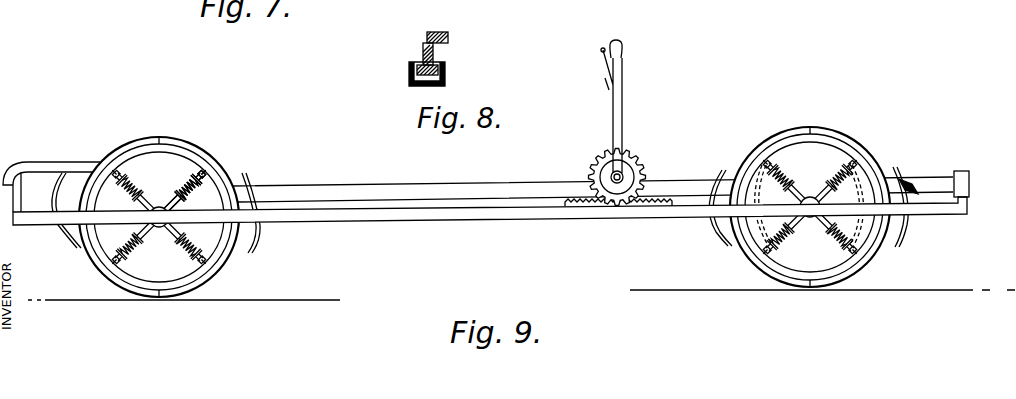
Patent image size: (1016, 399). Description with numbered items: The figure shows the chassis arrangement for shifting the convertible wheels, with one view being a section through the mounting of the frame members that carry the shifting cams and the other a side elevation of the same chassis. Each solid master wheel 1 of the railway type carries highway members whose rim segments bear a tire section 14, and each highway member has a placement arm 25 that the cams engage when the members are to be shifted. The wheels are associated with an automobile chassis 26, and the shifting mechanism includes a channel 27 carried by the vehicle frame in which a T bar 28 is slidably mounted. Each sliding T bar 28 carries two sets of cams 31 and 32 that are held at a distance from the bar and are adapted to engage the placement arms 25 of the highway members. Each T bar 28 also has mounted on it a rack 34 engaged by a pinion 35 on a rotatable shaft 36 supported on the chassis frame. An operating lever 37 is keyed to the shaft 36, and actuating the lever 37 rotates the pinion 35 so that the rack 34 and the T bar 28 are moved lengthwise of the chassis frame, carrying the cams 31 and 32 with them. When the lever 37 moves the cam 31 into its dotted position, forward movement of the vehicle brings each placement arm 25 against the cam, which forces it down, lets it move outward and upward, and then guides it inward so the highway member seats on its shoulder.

In FIG. 9, the master wheel 1 is at (183, 183).
In FIG. 9, the tire section 14 is at (152, 137).
In FIG. 9, the placement arm 25 is at (122, 170).
In FIG. 9, the automobile chassis 26 is at (447, 184).
In FIG. 8, the channel 27 is at (446, 72).
In FIG. 8, the T bar 28 is at (425, 50).
In FIG. 9, the cam 31 is at (258, 242).
In FIG. 9, the cam 32 is at (67, 243).
In FIG. 8, the rack 34 is at (443, 32).
In FIG. 9, the pinion 35 is at (603, 183).
In FIG. 9, the rotatable shaft 36 is at (623, 173).
In FIG. 9, the operating lever 37 is at (615, 118).